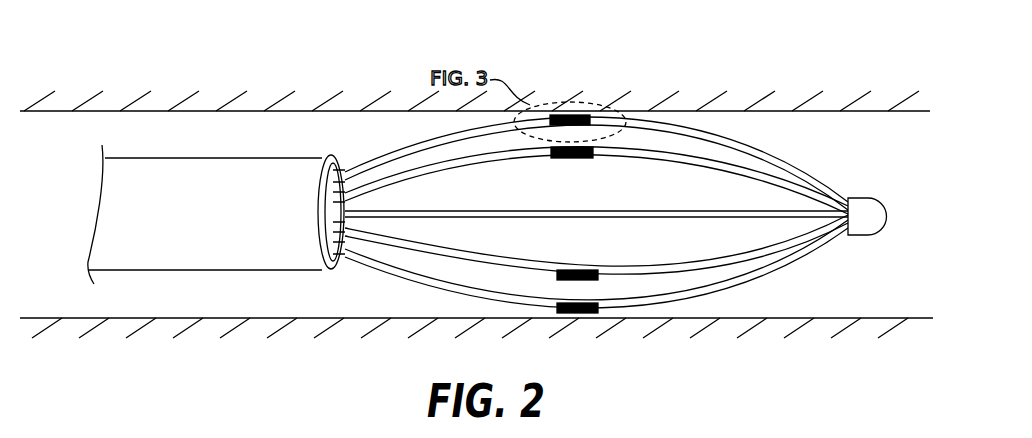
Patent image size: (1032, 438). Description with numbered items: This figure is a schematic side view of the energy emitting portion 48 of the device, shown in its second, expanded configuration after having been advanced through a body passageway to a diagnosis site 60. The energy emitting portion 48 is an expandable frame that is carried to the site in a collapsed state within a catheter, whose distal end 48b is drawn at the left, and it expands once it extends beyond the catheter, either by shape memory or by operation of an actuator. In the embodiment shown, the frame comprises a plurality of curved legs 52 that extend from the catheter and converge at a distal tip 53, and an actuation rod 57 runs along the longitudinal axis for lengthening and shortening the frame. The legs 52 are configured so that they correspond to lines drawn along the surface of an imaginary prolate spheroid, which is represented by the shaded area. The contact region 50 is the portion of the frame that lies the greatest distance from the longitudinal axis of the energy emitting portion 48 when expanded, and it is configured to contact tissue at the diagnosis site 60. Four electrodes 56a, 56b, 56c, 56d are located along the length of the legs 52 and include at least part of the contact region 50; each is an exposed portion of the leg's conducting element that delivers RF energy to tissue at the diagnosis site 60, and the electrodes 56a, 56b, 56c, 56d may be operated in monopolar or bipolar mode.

The diagnosis site 60 is at (42, 108).
The distal end of catheter shaft 48b is at (330, 158).
The energy emitting portion 48 is at (767, 279).
The curved legs 52 is at (777, 162).
The actuation rod 57 is at (553, 208).
The distal tip 53 is at (878, 198).
The electrode 56a is at (548, 113).
The electrode 56b is at (578, 159).
The electrode 56c is at (578, 270).
The electrode 56d is at (580, 318).
The contact region 50 is at (573, 110).